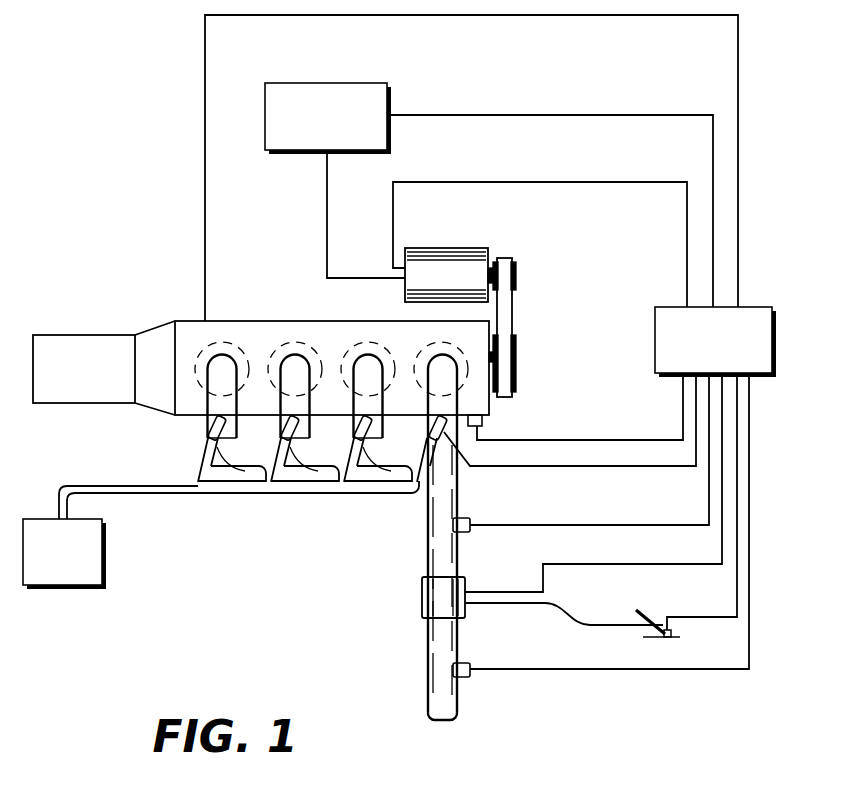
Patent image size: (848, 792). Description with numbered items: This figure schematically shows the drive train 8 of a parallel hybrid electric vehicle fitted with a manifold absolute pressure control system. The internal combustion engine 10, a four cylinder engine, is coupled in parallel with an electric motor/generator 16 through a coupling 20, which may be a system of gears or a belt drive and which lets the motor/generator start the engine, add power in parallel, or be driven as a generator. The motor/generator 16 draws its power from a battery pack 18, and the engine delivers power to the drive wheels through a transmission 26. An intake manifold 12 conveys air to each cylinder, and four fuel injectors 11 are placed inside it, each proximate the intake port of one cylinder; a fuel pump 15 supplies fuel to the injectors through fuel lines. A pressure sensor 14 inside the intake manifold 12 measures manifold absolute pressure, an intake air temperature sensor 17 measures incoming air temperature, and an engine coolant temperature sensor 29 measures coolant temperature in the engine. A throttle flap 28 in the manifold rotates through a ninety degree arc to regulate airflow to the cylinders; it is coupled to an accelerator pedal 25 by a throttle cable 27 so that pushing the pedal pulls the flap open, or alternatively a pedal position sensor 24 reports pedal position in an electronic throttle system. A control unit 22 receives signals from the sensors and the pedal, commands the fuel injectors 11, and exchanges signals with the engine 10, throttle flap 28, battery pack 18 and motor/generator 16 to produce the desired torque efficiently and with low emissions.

The drive train 8 is at (239, 677).
The internal combustion engine 10 is at (262, 321).
The fuel injectors 11 is at (283, 442).
The intake manifold 12 is at (318, 467).
The pressure sensor 14 is at (470, 522).
The fuel pump 15 is at (63, 589).
The motor/generator 16 is at (445, 248).
The intake air temperature sensor 17 is at (471, 666).
The battery pack 18 is at (322, 83).
The coupling 20 is at (513, 311).
The control unit 22 is at (655, 341).
The pedal position sensor 24 is at (673, 633).
The accelerator pedal 25 is at (645, 609).
The transmission 26 is at (79, 335).
The throttle cable 27 is at (599, 626).
The throttle flap 28 is at (422, 596).
The engine coolant temperature sensor 29 is at (484, 424).